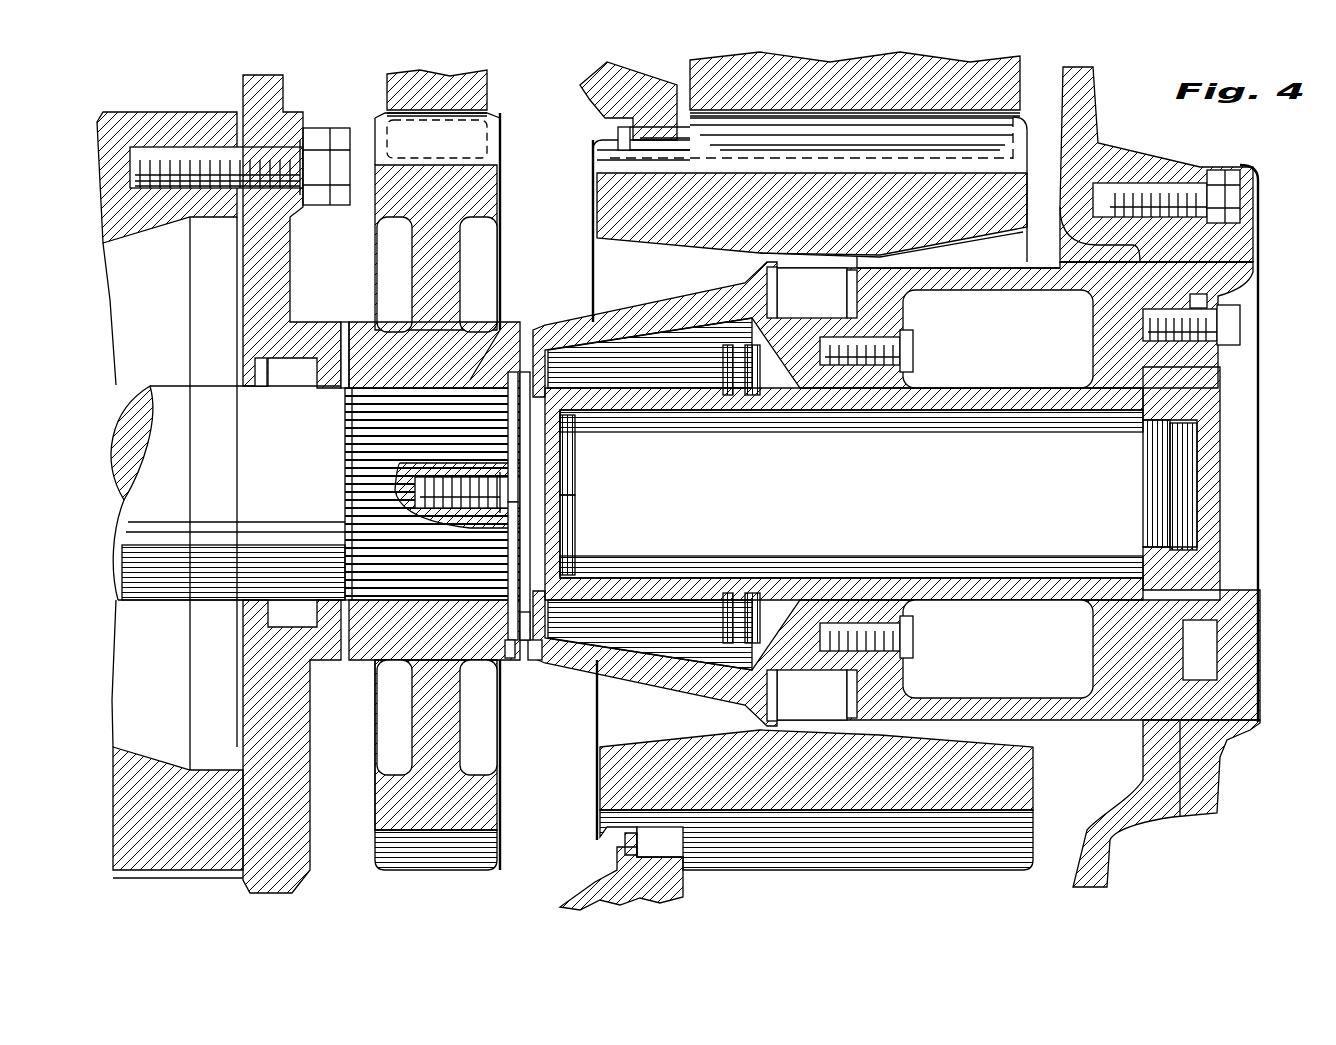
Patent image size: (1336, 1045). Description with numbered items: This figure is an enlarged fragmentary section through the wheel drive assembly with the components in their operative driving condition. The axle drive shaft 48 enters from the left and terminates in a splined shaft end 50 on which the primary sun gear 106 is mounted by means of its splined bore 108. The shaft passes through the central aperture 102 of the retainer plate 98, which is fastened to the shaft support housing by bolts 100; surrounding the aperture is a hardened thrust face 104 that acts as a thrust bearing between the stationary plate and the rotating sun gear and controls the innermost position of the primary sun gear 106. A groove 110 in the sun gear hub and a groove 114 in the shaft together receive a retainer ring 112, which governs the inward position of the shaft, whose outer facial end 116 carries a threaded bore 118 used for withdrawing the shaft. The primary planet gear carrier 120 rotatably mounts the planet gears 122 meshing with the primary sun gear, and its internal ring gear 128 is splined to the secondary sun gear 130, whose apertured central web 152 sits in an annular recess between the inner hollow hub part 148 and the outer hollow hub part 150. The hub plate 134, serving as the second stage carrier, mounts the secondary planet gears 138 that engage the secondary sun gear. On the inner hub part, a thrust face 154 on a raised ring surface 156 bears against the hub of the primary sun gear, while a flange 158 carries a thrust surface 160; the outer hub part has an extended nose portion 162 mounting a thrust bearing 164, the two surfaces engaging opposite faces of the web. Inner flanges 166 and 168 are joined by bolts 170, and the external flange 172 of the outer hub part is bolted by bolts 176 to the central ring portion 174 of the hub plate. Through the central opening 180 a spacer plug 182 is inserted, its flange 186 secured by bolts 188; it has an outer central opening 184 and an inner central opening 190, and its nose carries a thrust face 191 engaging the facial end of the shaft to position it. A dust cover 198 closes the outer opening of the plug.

The axle drive shaft 48 is at (203, 494).
The splined shaft end 50 is at (345, 470).
The retainer plate 98 is at (283, 290).
The bolts 100 is at (330, 130).
The central aperture 102 is at (323, 378).
The thrust face 104 is at (345, 325).
The primary sun gear 106 is at (495, 192).
The splined bore 108 is at (492, 322).
The groove 110 is at (505, 660).
The retainer ring 112 is at (513, 607).
The groove 114 is at (513, 397).
The facial end 116 is at (533, 523).
The threaded bore 118 is at (513, 493).
The primary planet gear carrier 120 is at (608, 72).
The planet gears 122 is at (483, 96).
The internal ring gear 128 is at (618, 137).
The secondary sun gear 130 is at (600, 212).
The hub plate 134 is at (1093, 128).
The secondary planet gears 138 is at (1010, 76).
The inner hollow hub part 148 is at (677, 320).
The outer hollow hub part 150 is at (1040, 266).
The central web 152 is at (882, 257).
The thrust face 154 is at (537, 662).
The raised ring surface 156 is at (540, 627).
The flange 158 is at (748, 284).
The thrust surface 160 is at (770, 683).
The extended nose portion 162 is at (912, 682).
The thrust bearing 164 is at (880, 303).
The inner flange 166 is at (847, 613).
The inner flange 168 is at (905, 618).
The bolts 170 is at (912, 346).
The external flange 172 is at (1207, 168).
The central ring portion 174 is at (1160, 170).
The bolts 176 is at (1232, 197).
The central opening 180 is at (1140, 612).
The spacer plug 182 is at (1012, 388).
The central opening 184 is at (1150, 492).
The flange 186 is at (1212, 294).
The bolts 188 is at (1240, 325).
The central opening 190 is at (560, 465).
The thrust face 191 is at (562, 545).
The dust cover 198 is at (1220, 462).